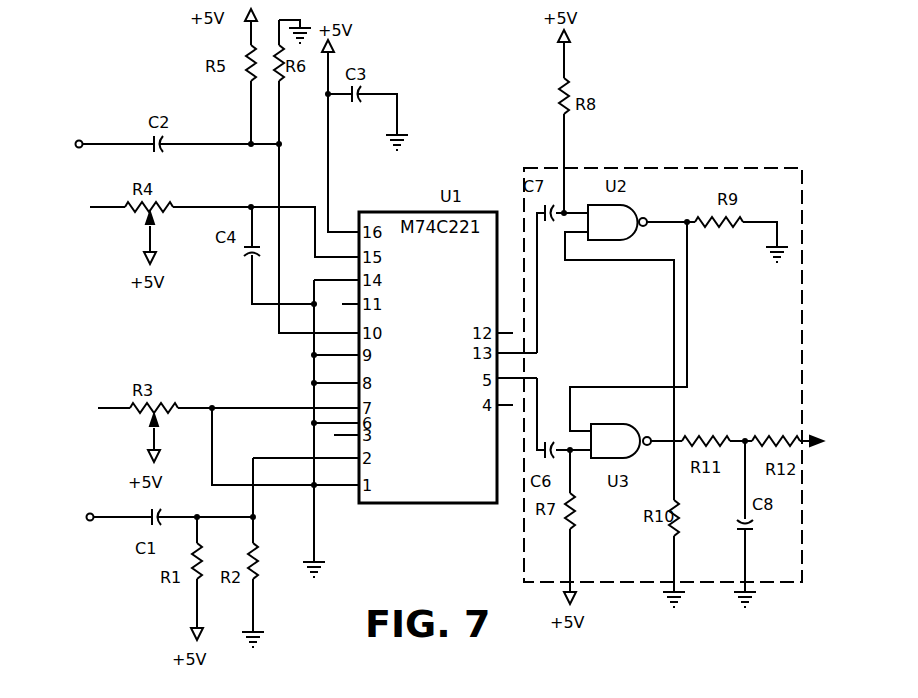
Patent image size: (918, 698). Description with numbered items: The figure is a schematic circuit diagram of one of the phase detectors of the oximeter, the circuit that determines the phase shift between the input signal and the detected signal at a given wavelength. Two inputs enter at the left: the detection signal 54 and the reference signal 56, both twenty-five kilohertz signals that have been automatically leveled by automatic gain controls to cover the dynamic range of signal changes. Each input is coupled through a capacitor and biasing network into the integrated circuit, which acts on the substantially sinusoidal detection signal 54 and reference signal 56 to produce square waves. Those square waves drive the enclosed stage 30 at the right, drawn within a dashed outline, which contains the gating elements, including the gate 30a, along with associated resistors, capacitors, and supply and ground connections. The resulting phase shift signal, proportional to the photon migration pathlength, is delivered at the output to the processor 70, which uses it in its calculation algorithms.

The pulse shaping circuit 30 is at (630, 150).
The NAND gate U2 of circuit 30 30a is at (662, 192).
The detection signal 54 is at (148, 137).
The reference signal 56 is at (139, 504).
The processor 70 is at (812, 416).